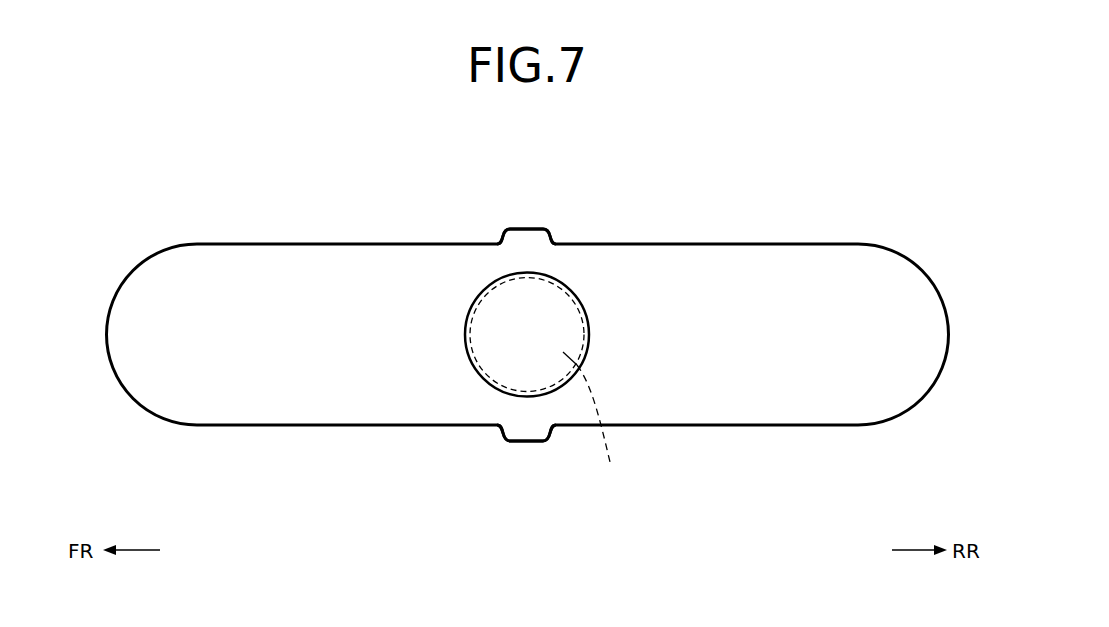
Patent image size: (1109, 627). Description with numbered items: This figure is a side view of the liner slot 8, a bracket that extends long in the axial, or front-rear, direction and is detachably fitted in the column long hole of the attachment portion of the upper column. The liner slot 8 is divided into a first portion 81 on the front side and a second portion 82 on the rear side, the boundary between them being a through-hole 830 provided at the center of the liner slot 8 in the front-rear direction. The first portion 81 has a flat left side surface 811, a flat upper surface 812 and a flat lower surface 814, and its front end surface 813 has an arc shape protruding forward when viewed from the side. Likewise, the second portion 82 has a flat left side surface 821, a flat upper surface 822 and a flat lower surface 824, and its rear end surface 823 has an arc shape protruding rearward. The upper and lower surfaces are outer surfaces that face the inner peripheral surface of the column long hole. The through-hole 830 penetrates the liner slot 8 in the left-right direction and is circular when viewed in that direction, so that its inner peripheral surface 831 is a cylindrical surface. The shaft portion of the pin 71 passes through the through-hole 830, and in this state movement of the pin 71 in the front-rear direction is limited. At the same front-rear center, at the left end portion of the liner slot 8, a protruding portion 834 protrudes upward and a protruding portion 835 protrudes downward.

The liner slot 8 is at (646, 196).
The first portion 81 is at (255, 437).
The second portion 82 is at (795, 437).
The left side surface 811 is at (330, 383).
The upper surface 812 is at (338, 244).
The front end surface 813 is at (115, 293).
The lower surface 814 is at (370, 430).
The left side surface 821 is at (700, 383).
The upper surface 822 is at (745, 244).
The rear end surface 823 is at (938, 293).
The lower surface 824 is at (745, 428).
The through-hole 830 is at (527, 335).
The inner peripheral surface 831 is at (587, 327).
The protruding portion 834 is at (527, 229).
The protruding portion 835 is at (527, 442).
The pin 71 is at (595, 422).